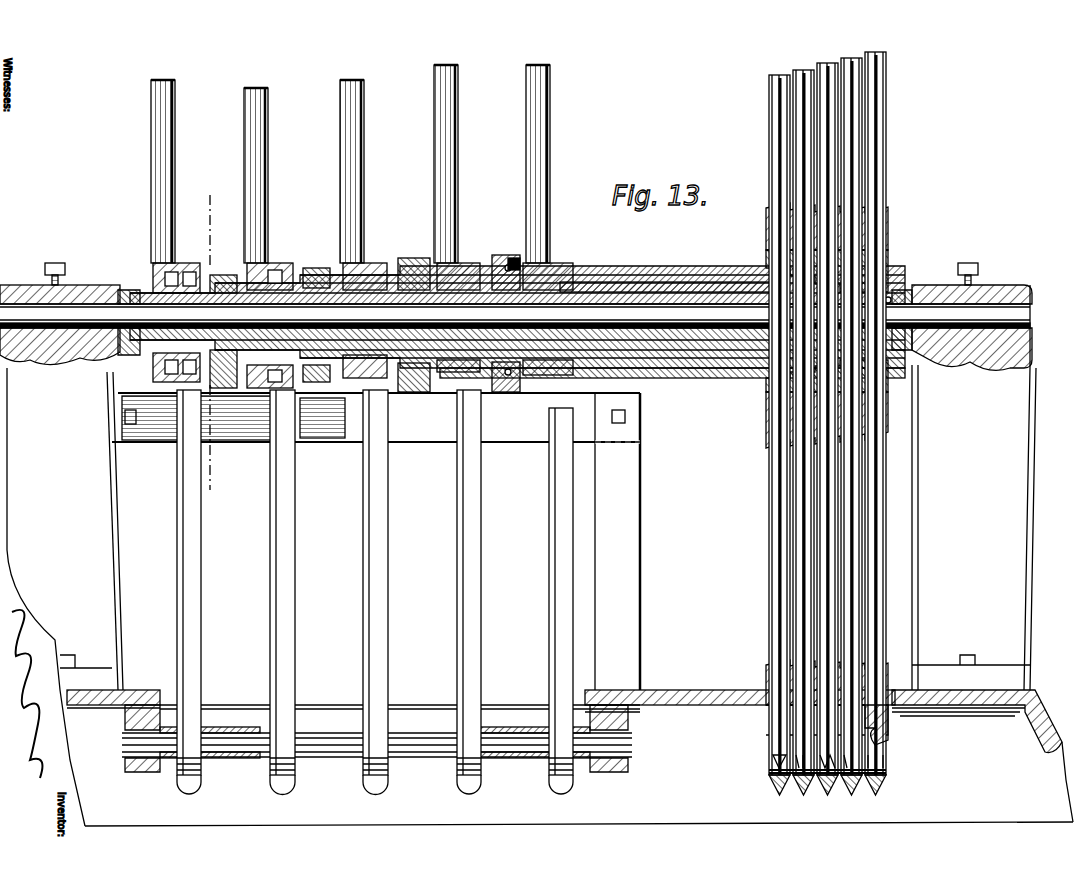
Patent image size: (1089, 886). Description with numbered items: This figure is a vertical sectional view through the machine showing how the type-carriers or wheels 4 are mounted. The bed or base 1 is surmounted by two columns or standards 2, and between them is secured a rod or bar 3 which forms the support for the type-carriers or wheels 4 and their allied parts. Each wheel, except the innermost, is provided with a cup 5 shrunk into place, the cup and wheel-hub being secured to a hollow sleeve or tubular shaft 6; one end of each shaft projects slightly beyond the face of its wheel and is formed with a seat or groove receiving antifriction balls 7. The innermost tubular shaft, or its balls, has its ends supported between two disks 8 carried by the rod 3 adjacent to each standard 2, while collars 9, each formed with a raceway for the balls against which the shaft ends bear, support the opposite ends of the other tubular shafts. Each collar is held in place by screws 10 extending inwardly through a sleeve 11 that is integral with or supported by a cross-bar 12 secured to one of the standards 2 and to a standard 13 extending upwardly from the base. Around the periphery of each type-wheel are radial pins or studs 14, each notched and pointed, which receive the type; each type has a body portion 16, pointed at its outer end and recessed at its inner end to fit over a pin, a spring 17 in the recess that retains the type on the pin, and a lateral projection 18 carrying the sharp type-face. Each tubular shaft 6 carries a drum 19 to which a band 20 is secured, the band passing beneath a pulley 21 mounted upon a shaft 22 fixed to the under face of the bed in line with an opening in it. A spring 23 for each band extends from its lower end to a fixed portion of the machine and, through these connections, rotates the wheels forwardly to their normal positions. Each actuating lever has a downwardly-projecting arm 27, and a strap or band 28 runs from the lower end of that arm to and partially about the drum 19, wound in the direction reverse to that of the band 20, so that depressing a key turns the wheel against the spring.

The bed or base 1 is at (700, 705).
The columns or standards 2 is at (540, 595).
The rod or bar 3 is at (515, 326).
The type-carriers or wheels 4 is at (875, 213).
The cup 5 is at (878, 272).
The hollow sleeve or tubular shaft 6 is at (710, 268).
The antifriction balls 7 is at (790, 240).
The disks 8 is at (905, 285).
The collars 9 is at (492, 260).
The screws 10 is at (505, 255).
The sleeve 11 is at (520, 262).
The cross-bar 12 is at (530, 425).
The standard 13 is at (617, 541).
The pins or studs 14 is at (783, 706).
The body portion of the type 16 is at (783, 735).
The spring 17 is at (890, 738).
The lateral projection 18 is at (890, 772).
The drum 19 is at (152, 285).
The band 20 is at (185, 262).
The pulley 21 is at (205, 705).
The shaft 22 is at (228, 740).
The spring 23 is at (365, 790).
The downwardly-projecting arm 27 is at (250, 152).
The strap or band 28 is at (165, 395).